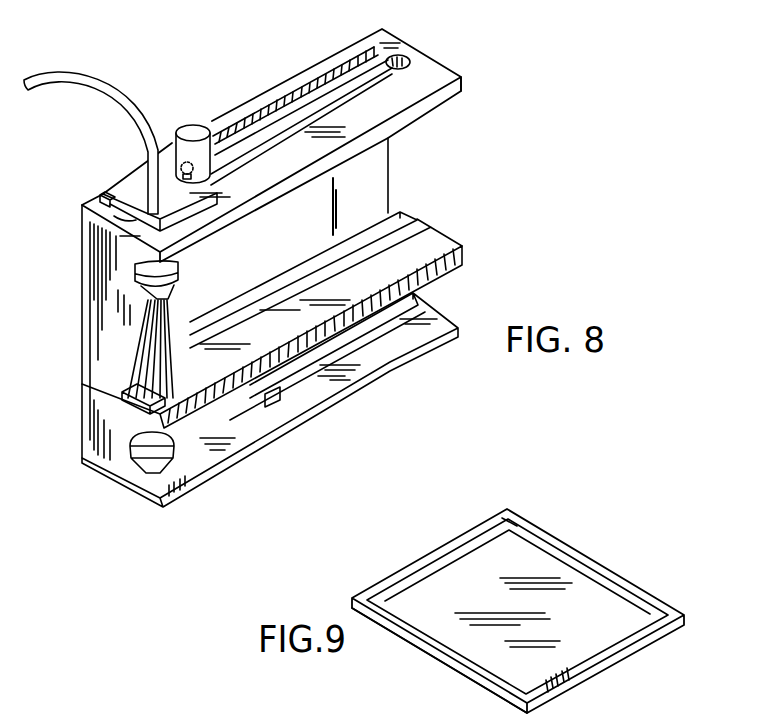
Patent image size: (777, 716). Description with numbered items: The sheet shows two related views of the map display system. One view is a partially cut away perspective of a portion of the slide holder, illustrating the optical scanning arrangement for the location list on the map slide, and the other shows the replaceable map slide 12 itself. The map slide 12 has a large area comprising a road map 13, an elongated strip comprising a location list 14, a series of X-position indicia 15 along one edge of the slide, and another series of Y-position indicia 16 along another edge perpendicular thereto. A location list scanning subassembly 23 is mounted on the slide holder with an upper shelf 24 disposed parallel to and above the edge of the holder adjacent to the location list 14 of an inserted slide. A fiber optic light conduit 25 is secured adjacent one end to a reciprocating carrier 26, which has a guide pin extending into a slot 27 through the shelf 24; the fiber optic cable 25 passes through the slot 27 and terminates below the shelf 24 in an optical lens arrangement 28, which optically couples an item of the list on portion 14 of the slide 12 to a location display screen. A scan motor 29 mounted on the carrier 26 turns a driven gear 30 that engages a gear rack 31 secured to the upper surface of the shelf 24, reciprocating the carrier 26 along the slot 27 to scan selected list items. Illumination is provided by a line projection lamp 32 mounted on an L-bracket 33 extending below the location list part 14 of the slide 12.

In FIG. 9, the map slide 12 is at (640, 648).
In FIG. 9, the road map 13 is at (590, 597).
In FIG. 8, the location list 14 is at (172, 376).
In FIG. 9, the location list 14 is at (510, 527).
In FIG. 9, the X-position indicia 15 is at (440, 650).
In FIG. 9, the Y-position indicia 16 is at (586, 640).
In FIG. 8, the location list scanning subassembly 23 is at (512, 74).
In FIG. 8, the upper shelf 24 is at (463, 92).
In FIG. 8, the fiber optic light conduit 25 is at (125, 88).
In FIG. 8, the reciprocating carrier 26 is at (193, 221).
In FIG. 8, the slot 27 is at (408, 58).
In FIG. 8, the optical lens arrangement 28 is at (170, 290).
In FIG. 8, the scan motor 29 is at (200, 127).
In FIG. 8, the driven gear 30 is at (192, 180).
In FIG. 8, the gear rack 31 is at (346, 50).
In FIG. 8, the line projection lamp 32 is at (178, 462).
In FIG. 8, the L-bracket 33 is at (160, 507).